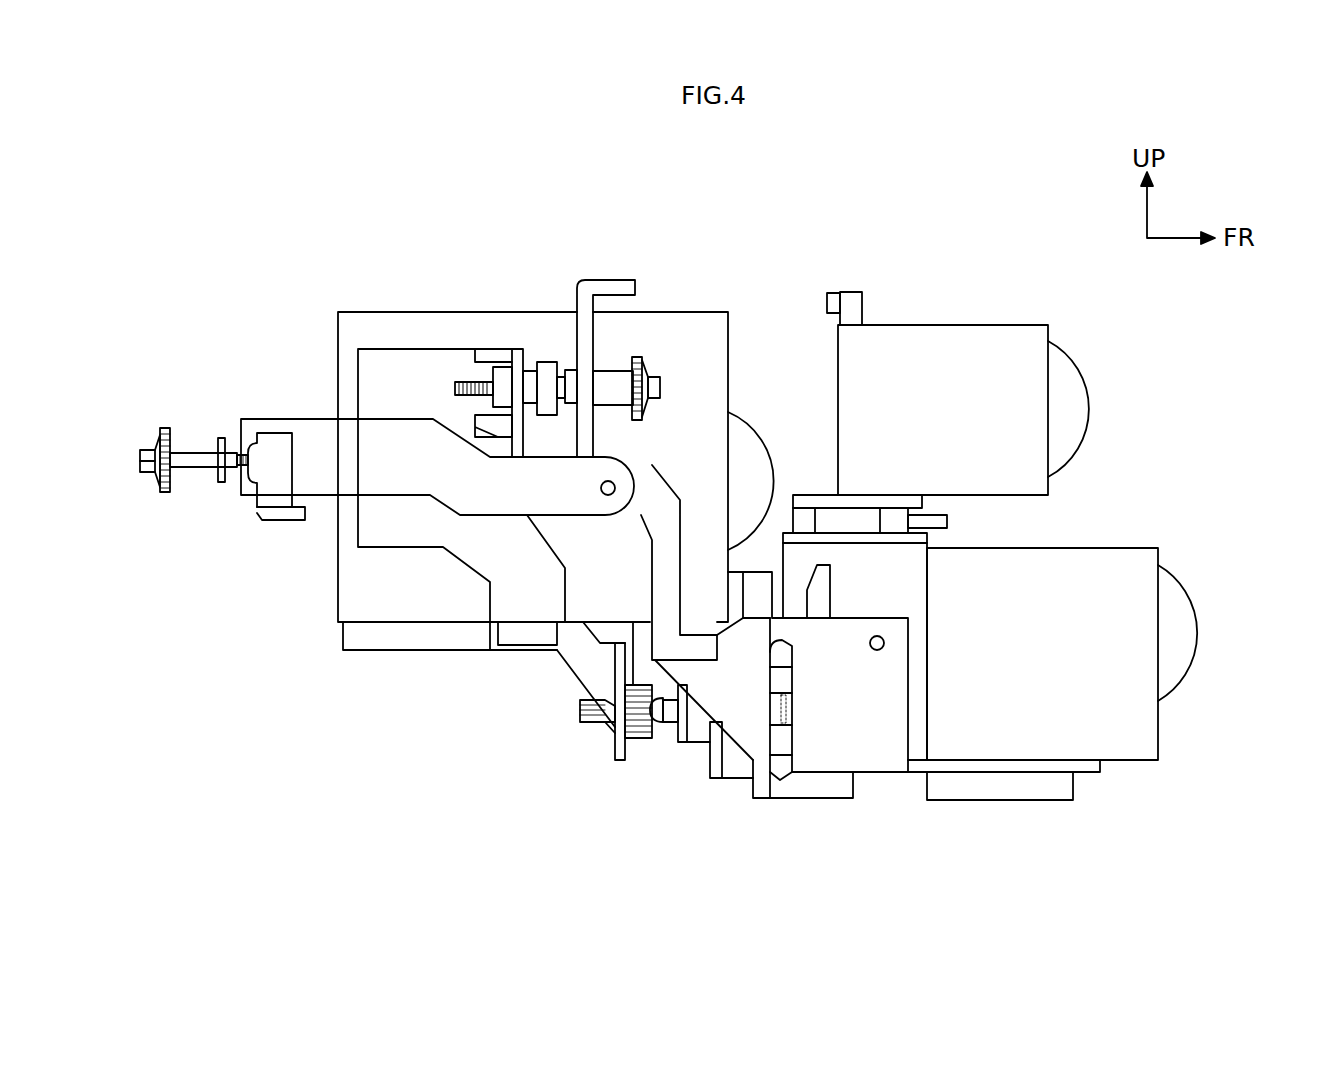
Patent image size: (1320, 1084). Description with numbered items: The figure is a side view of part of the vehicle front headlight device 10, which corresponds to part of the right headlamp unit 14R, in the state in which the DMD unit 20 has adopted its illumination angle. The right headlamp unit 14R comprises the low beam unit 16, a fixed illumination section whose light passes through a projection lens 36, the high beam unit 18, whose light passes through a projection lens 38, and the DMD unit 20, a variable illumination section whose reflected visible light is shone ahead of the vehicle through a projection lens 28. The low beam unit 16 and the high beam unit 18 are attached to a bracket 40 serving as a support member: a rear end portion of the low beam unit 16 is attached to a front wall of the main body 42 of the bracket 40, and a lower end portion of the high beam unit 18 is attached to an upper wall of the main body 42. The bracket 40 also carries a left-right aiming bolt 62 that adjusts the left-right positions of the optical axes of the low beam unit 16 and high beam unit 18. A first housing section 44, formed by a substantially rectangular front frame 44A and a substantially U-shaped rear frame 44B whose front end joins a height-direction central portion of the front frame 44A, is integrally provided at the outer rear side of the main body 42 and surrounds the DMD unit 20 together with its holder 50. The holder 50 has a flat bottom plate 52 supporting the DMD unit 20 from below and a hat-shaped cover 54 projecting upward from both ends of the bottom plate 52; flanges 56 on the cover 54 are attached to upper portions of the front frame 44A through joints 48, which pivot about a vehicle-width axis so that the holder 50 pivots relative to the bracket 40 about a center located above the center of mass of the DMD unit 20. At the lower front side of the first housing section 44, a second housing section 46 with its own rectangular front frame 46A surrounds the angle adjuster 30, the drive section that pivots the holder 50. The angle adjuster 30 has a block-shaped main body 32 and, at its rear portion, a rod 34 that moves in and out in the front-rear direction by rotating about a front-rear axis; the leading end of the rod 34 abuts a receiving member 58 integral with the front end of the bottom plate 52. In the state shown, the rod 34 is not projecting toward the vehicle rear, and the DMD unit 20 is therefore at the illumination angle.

The vehicle front headlight device 10 is at (228, 296).
The right headlamp unit 14R is at (873, 280).
The low beam unit 16 is at (1050, 806).
The high beam unit 18 is at (983, 322).
The DMD unit 20 is at (700, 312).
The projection lens 28 is at (773, 470).
The angle adjuster 30 is at (795, 744).
The main body 32 is at (794, 708).
The rod 34 is at (661, 724).
The projection lens 36 is at (1189, 640).
The projection lens 38 is at (1086, 410).
The bracket 40 is at (930, 573).
The main body 42 is at (932, 600).
The first housing section 44 is at (584, 517).
The front frame 44A is at (637, 287).
The rear frame 44B is at (306, 428).
The second housing section 46 is at (742, 754).
The front frame 46A is at (773, 632).
The joints 48 is at (545, 363).
The holder 50 is at (370, 652).
The bottom plate 52 is at (432, 636).
The cover 54 is at (403, 368).
The flanges 56 is at (512, 397).
The receiving member 58 is at (633, 732).
The left-right aiming bolt 62 is at (165, 494).